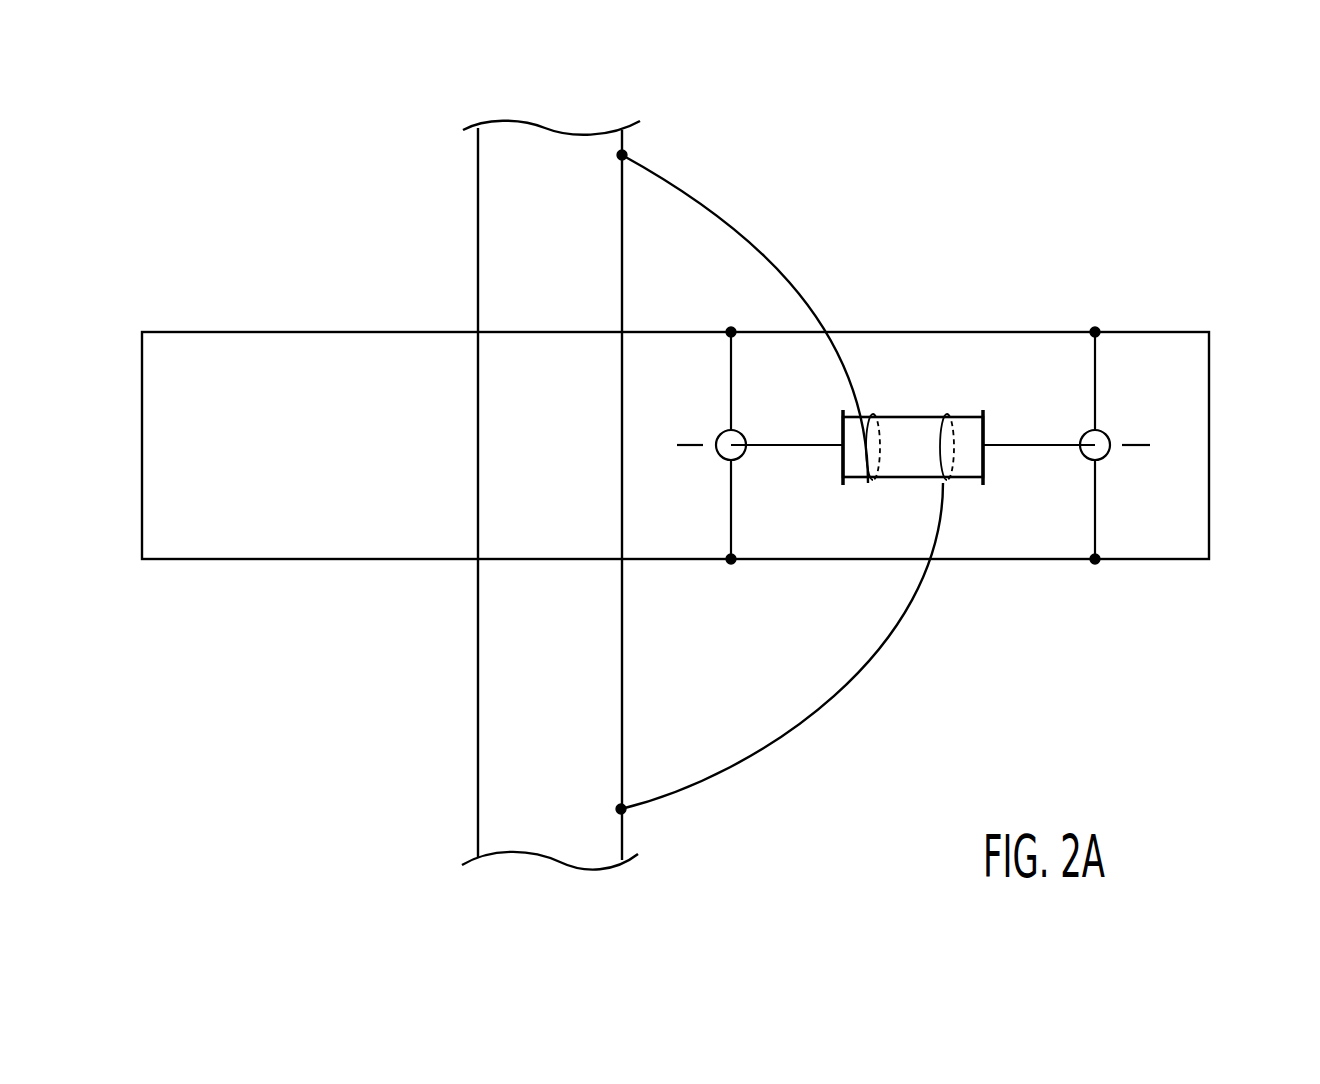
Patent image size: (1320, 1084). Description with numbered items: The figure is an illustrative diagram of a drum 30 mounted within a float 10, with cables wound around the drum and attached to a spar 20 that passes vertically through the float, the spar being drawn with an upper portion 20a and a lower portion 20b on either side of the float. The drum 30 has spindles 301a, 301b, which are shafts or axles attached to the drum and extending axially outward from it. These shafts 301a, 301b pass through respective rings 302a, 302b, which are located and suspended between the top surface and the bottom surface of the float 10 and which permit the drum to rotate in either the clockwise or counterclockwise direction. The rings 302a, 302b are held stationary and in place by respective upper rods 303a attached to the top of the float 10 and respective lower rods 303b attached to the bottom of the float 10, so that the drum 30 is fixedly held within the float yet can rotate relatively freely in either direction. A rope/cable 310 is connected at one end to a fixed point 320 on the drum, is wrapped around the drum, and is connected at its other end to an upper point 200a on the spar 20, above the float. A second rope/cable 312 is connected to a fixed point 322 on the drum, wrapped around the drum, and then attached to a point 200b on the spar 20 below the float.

The float 10 is at (212, 350).
The spar 20 is at (491, 477).
The spar portion 20a is at (478, 212).
The spar portion 20b is at (478, 672).
The upper point 200a is at (624, 155).
The lower point 200b is at (623, 810).
The drum 30 is at (913, 451).
The spindle 301a is at (785, 447).
The spindle 301b is at (1028, 447).
The ring 302a is at (745, 440).
The ring 302b is at (1110, 440).
The upper rod 303a is at (731, 370).
The lower rod 303b is at (731, 522).
The rope/cable 310 is at (781, 250).
The rope/cable 312 is at (826, 733).
The fixed point 320 is at (870, 417).
The fixed point 322 is at (945, 483).